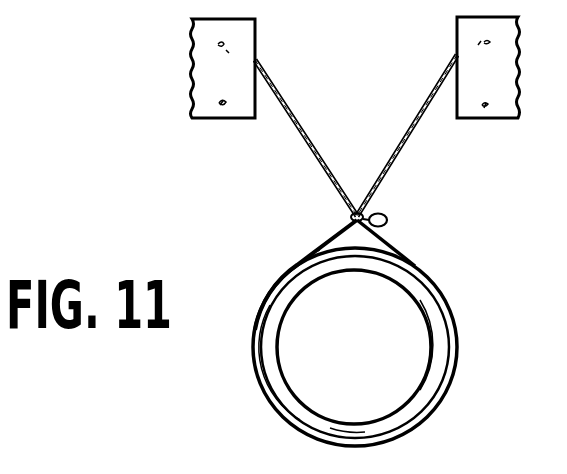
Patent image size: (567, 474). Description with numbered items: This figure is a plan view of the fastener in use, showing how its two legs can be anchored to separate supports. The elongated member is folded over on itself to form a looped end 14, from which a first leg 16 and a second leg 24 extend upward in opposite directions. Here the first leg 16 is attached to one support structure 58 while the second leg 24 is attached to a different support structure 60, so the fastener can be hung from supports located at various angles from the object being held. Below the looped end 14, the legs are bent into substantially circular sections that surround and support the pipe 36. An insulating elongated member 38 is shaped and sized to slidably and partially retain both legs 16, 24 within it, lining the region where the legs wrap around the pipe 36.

The support structure 58 is at (217, 118).
The support structure 60 is at (485, 118).
The first integral leg 16 is at (299, 123).
The second integral leg 24 is at (413, 122).
The looped end 14 is at (415, 211).
The pipe 36 is at (432, 383).
The insulating elongated member 38 is at (257, 325).